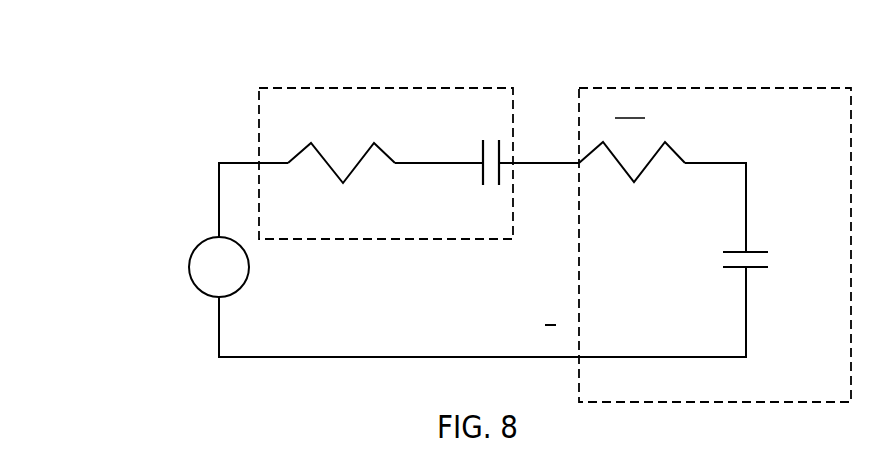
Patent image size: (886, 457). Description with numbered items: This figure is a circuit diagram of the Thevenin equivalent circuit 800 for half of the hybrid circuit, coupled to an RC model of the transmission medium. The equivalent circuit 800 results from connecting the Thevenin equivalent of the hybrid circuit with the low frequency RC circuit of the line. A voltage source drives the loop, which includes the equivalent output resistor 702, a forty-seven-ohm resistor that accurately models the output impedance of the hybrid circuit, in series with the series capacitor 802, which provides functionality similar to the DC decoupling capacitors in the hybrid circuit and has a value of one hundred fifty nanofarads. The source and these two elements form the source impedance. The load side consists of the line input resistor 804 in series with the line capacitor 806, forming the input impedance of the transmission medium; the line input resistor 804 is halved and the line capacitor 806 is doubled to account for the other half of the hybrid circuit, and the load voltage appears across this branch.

The Thevenin equivalent circuit 800 is at (462, 40).
The equivalent output resistor 702 is at (343, 183).
The series capacitor 802 is at (483, 146).
The line input resistor 804 is at (641, 176).
The line capacitor 806 is at (759, 269).